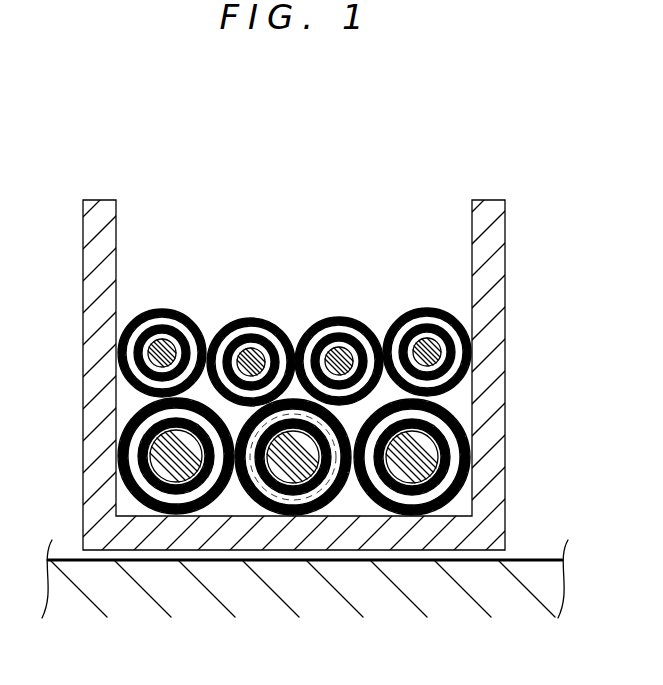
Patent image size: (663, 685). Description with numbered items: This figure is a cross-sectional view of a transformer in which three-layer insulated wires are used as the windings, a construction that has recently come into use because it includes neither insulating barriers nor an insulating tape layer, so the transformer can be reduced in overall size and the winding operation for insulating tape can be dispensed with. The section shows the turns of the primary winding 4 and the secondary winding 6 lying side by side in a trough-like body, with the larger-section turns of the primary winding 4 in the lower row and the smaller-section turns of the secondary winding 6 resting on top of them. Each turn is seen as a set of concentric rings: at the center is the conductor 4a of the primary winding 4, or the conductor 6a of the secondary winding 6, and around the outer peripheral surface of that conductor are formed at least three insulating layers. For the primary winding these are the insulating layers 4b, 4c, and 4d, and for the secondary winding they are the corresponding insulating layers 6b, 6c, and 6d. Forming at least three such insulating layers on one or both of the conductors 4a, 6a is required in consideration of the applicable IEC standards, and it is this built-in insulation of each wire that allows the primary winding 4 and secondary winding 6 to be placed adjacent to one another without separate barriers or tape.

The primary winding 4 is at (294, 523).
The conductor 4a is at (281, 539).
The insulating layer 4b is at (299, 533).
The insulating layer 4c is at (327, 531).
The insulating layer 4d is at (349, 523).
The secondary winding 6 is at (294, 323).
The conductor 6a is at (222, 327).
The insulating layer 6b is at (277, 330).
The insulating layer 6c is at (363, 330).
The insulating layer 6d is at (367, 325).